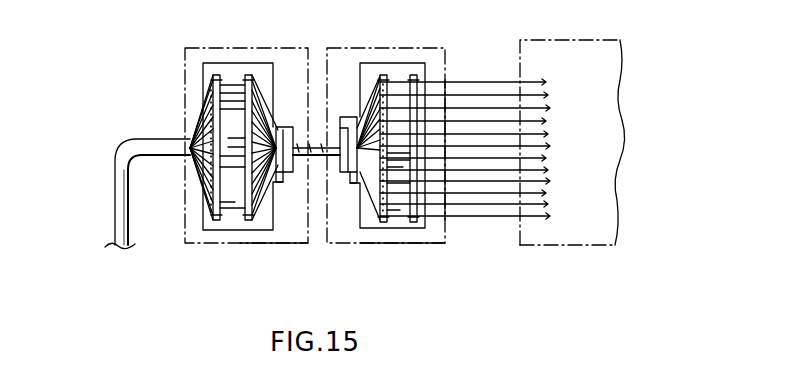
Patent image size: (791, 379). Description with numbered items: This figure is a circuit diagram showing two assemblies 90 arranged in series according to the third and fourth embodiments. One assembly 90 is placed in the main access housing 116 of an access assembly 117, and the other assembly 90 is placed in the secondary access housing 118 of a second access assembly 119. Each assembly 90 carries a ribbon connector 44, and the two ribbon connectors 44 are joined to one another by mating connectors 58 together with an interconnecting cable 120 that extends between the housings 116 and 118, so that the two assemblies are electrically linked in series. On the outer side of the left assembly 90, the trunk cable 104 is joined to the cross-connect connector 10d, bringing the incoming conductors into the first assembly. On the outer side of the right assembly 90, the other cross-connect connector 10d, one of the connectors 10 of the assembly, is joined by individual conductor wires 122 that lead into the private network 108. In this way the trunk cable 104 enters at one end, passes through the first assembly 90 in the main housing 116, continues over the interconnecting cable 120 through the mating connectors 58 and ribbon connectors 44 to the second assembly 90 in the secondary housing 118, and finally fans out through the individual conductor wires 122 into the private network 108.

The cross-connect connector 10 is at (247, 190).
The cross-connect connector 10d is at (210, 110).
The ribbon connector 44 is at (292, 126).
The mating connector 58 is at (282, 184).
The assembly 90 is at (245, 237).
The trunk cable 104 is at (116, 227).
The private network 108 is at (623, 72).
The main access housing 116 is at (197, 245).
The access assembly 117 is at (300, 250).
The secondary access housing 118 is at (354, 251).
The access assembly 119 is at (378, 248).
The interconnecting cable 120 is at (300, 146).
The individual conductor wires 122 is at (476, 206).